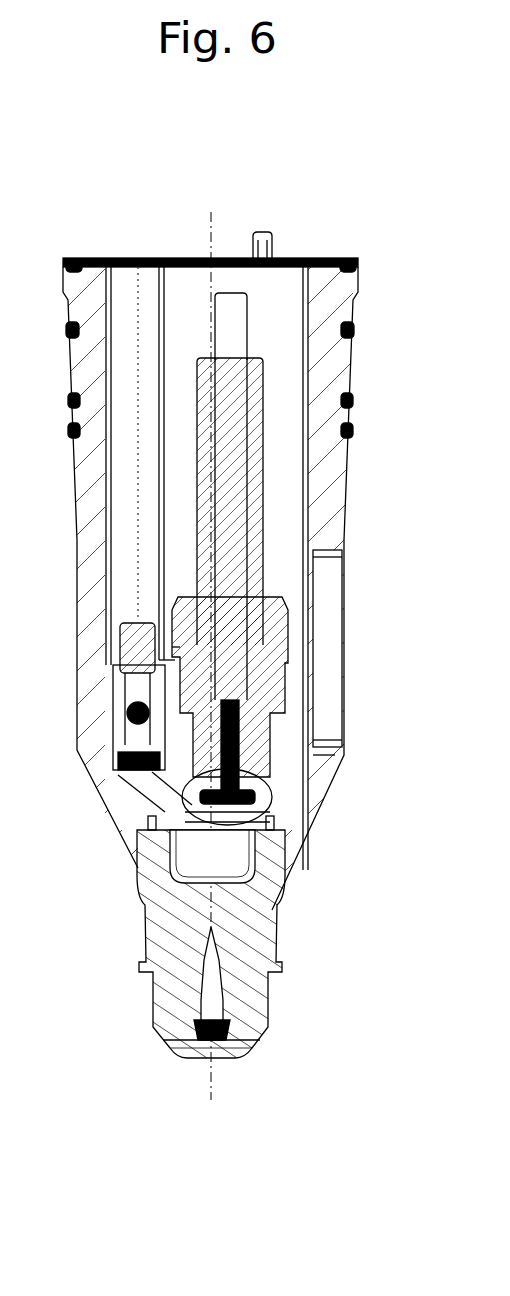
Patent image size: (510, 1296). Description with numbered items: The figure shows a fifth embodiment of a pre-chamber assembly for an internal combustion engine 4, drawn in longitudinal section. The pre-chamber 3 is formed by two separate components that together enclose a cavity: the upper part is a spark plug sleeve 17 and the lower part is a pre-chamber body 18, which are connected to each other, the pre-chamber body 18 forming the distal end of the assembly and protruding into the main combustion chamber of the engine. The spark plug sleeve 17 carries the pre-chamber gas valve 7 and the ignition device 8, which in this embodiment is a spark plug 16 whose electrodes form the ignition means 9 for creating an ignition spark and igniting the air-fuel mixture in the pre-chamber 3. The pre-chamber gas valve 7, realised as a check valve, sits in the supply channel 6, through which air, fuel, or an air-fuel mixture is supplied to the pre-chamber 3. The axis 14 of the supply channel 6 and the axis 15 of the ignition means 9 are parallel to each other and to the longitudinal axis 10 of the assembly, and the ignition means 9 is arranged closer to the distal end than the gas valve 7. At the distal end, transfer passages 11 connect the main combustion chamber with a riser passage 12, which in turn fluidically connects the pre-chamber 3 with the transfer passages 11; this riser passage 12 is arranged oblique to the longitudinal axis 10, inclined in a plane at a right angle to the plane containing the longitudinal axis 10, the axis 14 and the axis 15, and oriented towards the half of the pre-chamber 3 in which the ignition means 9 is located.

The pre-chamber 3 is at (225, 857).
The internal combustion engine 4 is at (421, 217).
The supply channel 6 is at (157, 791).
The pre-chamber gas valve 7 is at (123, 735).
The ignition device 8 is at (272, 795).
The ignition means 9 is at (341, 669).
The longitudinal axis 10 is at (211, 222).
The transfer passages 11 is at (176, 1040).
The riser passage 12 is at (215, 988).
The axis of the supply channel 14 is at (137, 540).
The axis of the ignition means 15 is at (228, 515).
The spark plug 16 is at (258, 630).
The spark plug sleeve 17 is at (509, 338).
The pre-chamber body 18 is at (167, 915).